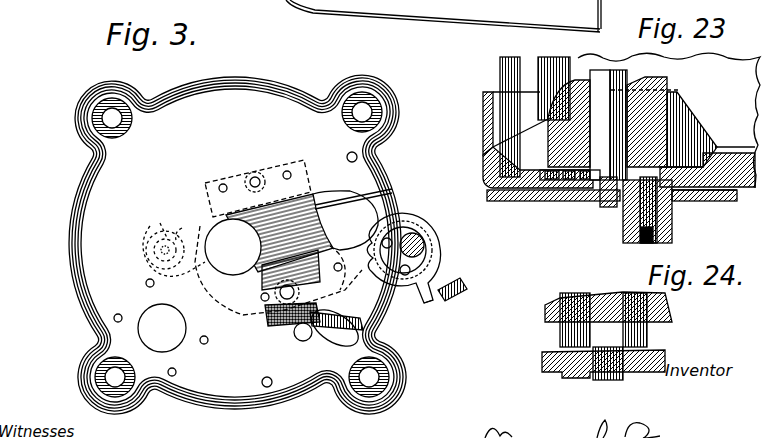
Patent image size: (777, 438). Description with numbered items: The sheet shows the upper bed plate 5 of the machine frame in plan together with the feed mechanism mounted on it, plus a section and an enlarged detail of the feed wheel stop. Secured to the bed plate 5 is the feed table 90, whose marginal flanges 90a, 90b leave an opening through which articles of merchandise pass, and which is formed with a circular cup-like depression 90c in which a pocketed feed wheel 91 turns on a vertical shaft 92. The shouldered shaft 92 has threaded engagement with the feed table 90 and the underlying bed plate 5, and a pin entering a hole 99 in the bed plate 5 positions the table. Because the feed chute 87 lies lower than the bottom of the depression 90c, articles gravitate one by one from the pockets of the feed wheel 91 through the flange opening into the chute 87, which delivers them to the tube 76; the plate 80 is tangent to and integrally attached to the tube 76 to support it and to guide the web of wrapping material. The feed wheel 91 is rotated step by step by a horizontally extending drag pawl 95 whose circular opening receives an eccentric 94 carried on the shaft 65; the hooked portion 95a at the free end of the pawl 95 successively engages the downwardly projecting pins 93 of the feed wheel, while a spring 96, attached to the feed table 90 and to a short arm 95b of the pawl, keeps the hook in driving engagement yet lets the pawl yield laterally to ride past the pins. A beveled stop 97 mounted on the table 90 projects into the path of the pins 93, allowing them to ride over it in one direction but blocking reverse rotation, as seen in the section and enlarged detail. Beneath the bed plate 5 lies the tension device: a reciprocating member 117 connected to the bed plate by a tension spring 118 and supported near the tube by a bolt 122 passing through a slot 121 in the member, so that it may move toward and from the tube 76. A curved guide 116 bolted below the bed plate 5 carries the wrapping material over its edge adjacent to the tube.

In FIG. 3, the upper bed plate 5 is at (80, 210).
In FIG. 23, the upper bed plate 5 is at (515, 200).
In FIG. 3, the feed chute 87 is at (262, 249).
In FIG. 3, the curved guide 116 is at (309, 194).
In FIG. 3, the reciprocating member 117 is at (243, 316).
In FIG. 3, the tension spring 118 is at (322, 336).
In FIG. 3, the slot 121 is at (174, 258).
In FIG. 3, the bolt 122 is at (158, 223).
In FIG. 3, the eccentric 94 is at (408, 232).
In FIG. 3, the shaft 65 is at (423, 248).
In FIG. 3, the drag pawl 95 is at (320, 292).
In FIG. 23, the drag pawl 95 is at (716, 196).
In FIG. 23, the hooked portion 95a is at (558, 182).
In FIG. 3, the short arm 95b is at (433, 300).
In FIG. 3, the spring 96 is at (460, 281).
In FIG. 3, the hole 99 is at (255, 375).
In FIG. 23, the tube 76 is at (500, 73).
In FIG. 23, the plate 80 is at (706, 72).
In FIG. 23, the feed table 90 is at (745, 150).
In FIG. 24, the feed table 90 is at (560, 371).
In FIG. 23, the flange 90a is at (483, 133).
In FIG. 23, the flange 90b is at (731, 127).
In FIG. 23, the cup-like depression 90c is at (487, 160).
In FIG. 23, the feed wheel 91 is at (645, 92).
In FIG. 24, the feed wheel 91 is at (608, 296).
In FIG. 23, the vertical shaft 92 is at (600, 70).
In FIG. 23, the pins 93 is at (618, 192).
In FIG. 24, the pins 93 is at (560, 331).
In FIG. 23, the stop 97 is at (658, 218).
In FIG. 24, the stop 97 is at (608, 371).